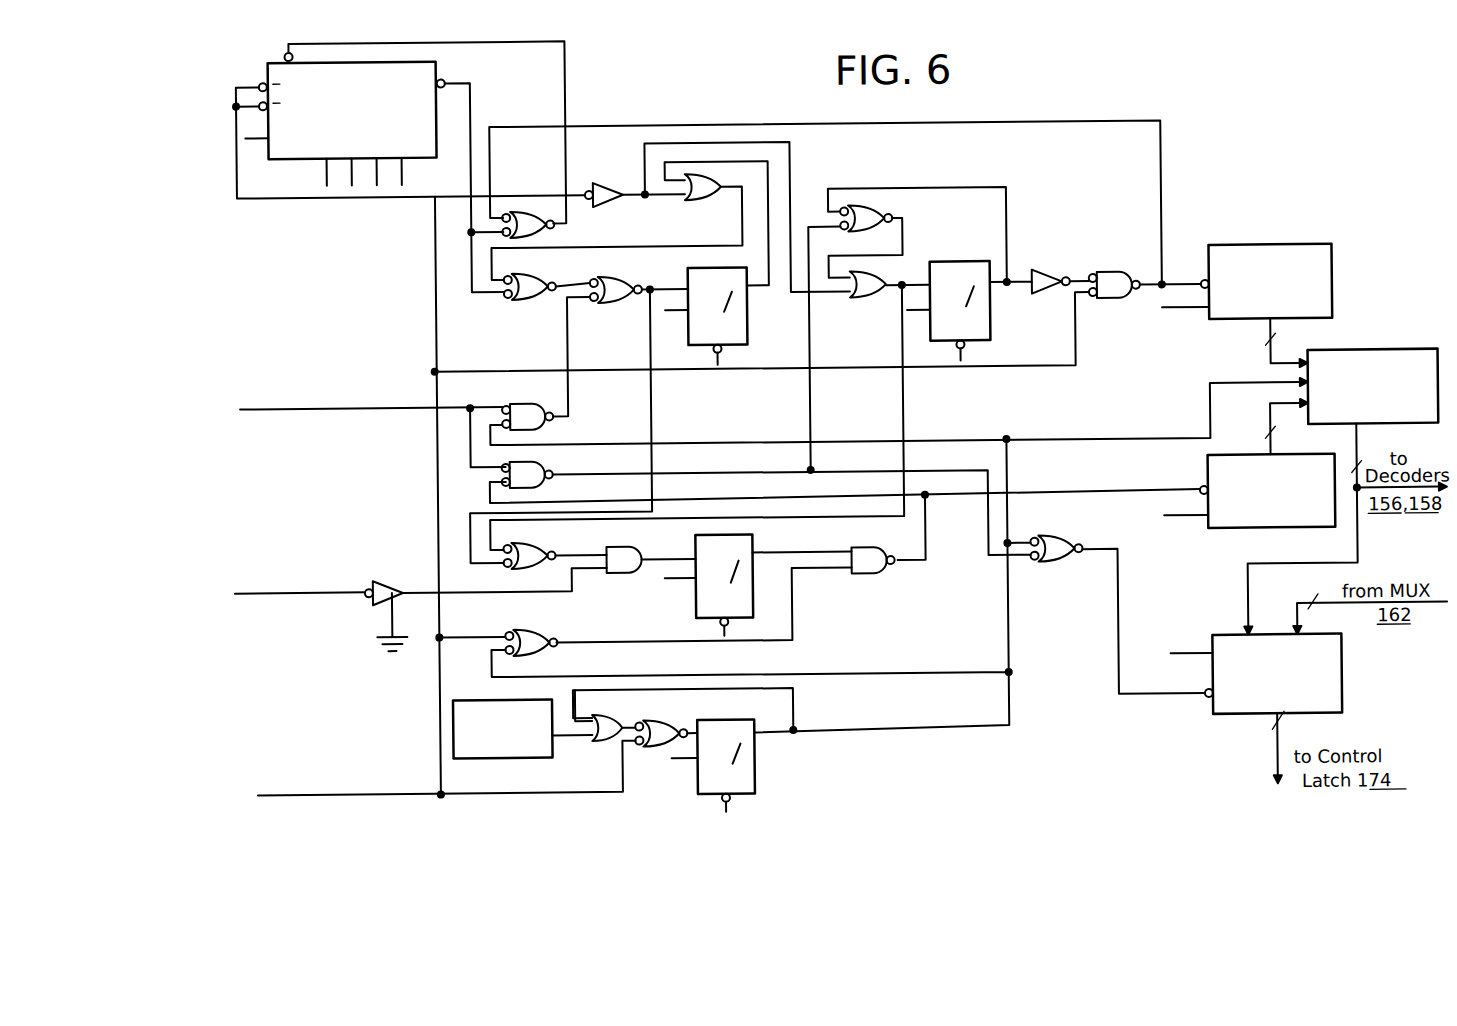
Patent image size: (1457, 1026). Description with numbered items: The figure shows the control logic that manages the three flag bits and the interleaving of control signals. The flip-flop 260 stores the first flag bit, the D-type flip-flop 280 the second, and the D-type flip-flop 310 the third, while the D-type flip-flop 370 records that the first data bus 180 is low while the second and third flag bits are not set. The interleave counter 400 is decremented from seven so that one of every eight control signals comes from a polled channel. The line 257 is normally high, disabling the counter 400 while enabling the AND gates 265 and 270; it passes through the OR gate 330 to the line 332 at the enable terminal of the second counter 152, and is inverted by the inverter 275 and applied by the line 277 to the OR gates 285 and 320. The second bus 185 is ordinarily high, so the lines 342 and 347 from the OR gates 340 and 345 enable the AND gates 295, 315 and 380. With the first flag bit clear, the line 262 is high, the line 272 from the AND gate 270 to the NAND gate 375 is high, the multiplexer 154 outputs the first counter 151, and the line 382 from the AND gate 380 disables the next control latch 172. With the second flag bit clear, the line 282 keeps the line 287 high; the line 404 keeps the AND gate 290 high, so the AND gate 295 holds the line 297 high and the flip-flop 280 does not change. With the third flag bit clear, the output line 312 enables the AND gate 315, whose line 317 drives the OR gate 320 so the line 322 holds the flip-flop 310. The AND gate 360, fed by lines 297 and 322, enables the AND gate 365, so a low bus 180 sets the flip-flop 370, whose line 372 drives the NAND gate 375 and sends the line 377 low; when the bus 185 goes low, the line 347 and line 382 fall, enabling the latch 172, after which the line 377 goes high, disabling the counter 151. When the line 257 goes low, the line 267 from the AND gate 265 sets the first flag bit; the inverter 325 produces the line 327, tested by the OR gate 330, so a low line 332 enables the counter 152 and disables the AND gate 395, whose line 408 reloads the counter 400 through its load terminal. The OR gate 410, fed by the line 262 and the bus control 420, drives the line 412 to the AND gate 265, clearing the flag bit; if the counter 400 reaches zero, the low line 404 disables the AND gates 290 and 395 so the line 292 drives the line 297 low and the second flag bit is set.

The interleave counter 400 is at (316, 156).
The line 404 is at (474, 110).
The line 408 is at (568, 88).
The AND gate 395 is at (530, 208).
The inverter 275 is at (616, 182).
The line 277 is at (792, 168).
The OR gate 285 is at (706, 203).
The line 287 is at (744, 236).
The line 282 is at (768, 290).
The D-type flip-flop 280 is at (748, 334).
The AND gate 290 is at (528, 298).
The line 292 is at (585, 280).
The AND gate 295 is at (616, 277).
The line 297 is at (651, 353).
The line 342 is at (568, 353).
The output line 312 is at (1007, 188).
The AND gate 315 is at (878, 214).
The line 317 is at (904, 245).
The OR gate 320 is at (870, 300).
The line 322 is at (902, 335).
The D-type flip-flop 310 is at (992, 325).
The inverter 325 is at (1048, 272).
The line 327 is at (1082, 282).
The OR gate 330 is at (1119, 275).
The line 332 is at (1185, 285).
The line 347 is at (806, 369).
The second counter 152 is at (1277, 250).
The multiplexer 154 is at (1360, 356).
The first counter 151 is at (1207, 473).
The next control latch 172 is at (1340, 668).
The second bus 185 is at (371, 398).
The first data bus 180 is at (300, 580).
The OR gate 340 is at (535, 392).
The OR gate 345 is at (542, 467).
The line 262 is at (935, 443).
The line 377 is at (826, 497).
The AND gate 380 is at (1057, 542).
The line 382 is at (1117, 607).
The AND gate 360 is at (532, 552).
The AND gate 365 is at (632, 578).
The D-type flip-flop 370 is at (694, 598).
The line 372 is at (775, 553).
The NAND gate 375 is at (876, 576).
The line 272 is at (644, 642).
The AND gate 270 is at (545, 617).
The bus control 420 is at (498, 698).
The OR gate 410 is at (603, 746).
The line 412 is at (642, 724).
The AND gate 265 is at (662, 752).
The line 267 is at (690, 722).
The flip-flop 260 is at (753, 747).
The line 257 is at (315, 791).